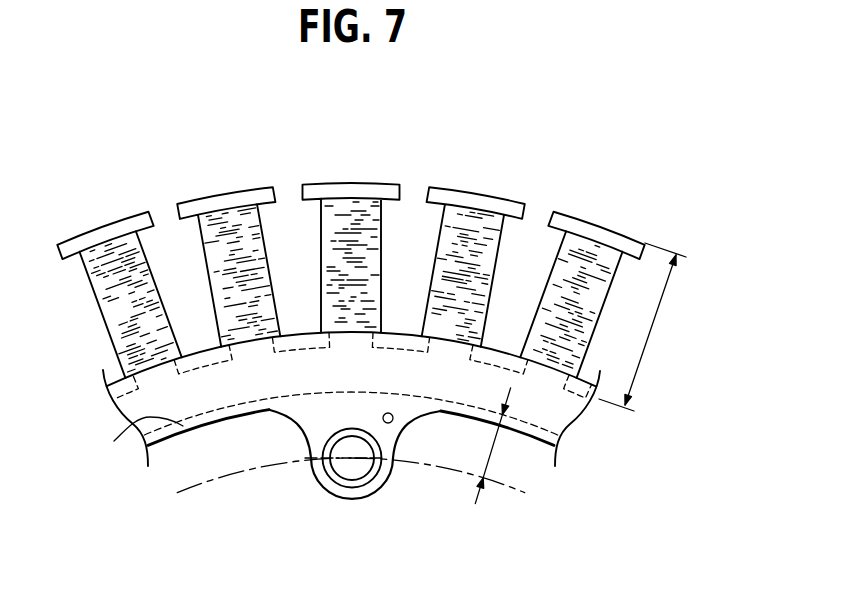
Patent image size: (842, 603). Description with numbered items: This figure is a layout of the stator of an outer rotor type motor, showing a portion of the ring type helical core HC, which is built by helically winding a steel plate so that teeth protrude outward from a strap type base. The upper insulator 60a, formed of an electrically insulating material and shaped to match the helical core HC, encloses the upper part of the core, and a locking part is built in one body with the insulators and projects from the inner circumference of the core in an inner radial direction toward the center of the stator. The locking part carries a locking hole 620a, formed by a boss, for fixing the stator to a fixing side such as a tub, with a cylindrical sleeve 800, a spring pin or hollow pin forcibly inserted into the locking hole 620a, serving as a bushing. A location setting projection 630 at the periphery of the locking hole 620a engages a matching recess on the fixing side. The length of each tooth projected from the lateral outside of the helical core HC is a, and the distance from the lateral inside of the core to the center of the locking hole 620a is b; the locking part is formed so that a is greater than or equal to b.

The upper insulator 60a is at (187, 428).
The locking hole 620a is at (352, 463).
The cylindrical sleeve 800 is at (334, 477).
The location setting projection 630 is at (391, 423).
The helical core HC is at (108, 443).
The length of the teeth a is at (642, 327).
The distance from lateral inside of helical core to locking hole center b is at (493, 446).